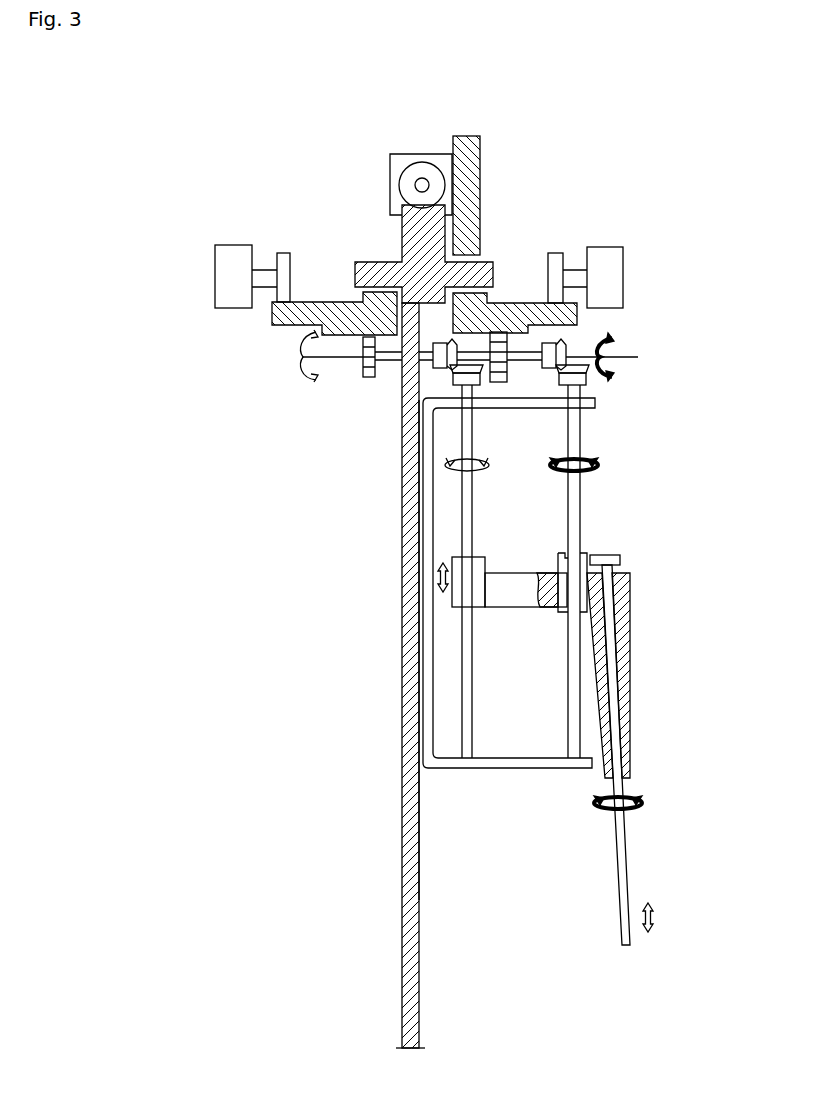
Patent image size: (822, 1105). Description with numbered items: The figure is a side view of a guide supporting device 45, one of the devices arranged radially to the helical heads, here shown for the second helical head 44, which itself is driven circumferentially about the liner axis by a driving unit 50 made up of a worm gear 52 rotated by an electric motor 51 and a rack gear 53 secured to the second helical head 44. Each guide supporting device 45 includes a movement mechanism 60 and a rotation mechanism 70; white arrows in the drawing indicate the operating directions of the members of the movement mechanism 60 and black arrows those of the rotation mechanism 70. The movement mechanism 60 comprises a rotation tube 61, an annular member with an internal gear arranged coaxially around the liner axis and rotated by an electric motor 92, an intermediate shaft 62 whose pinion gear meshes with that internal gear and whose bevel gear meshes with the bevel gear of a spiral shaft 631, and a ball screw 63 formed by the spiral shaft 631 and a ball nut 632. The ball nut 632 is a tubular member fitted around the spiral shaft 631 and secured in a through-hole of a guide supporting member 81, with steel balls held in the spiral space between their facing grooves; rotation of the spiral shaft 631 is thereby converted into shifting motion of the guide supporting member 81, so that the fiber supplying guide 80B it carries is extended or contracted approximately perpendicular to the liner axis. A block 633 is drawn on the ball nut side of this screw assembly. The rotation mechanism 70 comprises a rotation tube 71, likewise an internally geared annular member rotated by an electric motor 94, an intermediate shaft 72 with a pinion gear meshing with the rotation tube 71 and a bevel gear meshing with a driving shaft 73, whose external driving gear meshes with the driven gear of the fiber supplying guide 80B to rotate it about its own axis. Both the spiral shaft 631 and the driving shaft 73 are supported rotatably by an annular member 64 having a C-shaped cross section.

The second helical head 44 is at (330, 637).
The guide supporting device 45 is at (385, 683).
The driving unit 50 is at (403, 128).
The electric motor 51 is at (390, 176).
The worm gear 52 is at (392, 155).
The rack gear 53 is at (402, 217).
The movement mechanism 60 is at (303, 238).
The rotation tube 61 is at (281, 326).
The intermediate shaft 62 is at (392, 363).
The ball screw 63 is at (510, 690).
The spiral shaft 631 is at (467, 512).
The ball nut 632 is at (500, 554).
The arm 633 is at (477, 600).
The annular member 64 is at (433, 726).
The rotation mechanism 70 is at (538, 238).
The rotation tube 71 is at (528, 303).
The intermediate shaft 72 is at (520, 334).
The driving shaft 73 is at (580, 512).
The fiber supplying guide 80B is at (625, 845).
The guide supporting member 81 is at (632, 722).
The electric motor 92 is at (234, 256).
The electric motor 94 is at (605, 256).